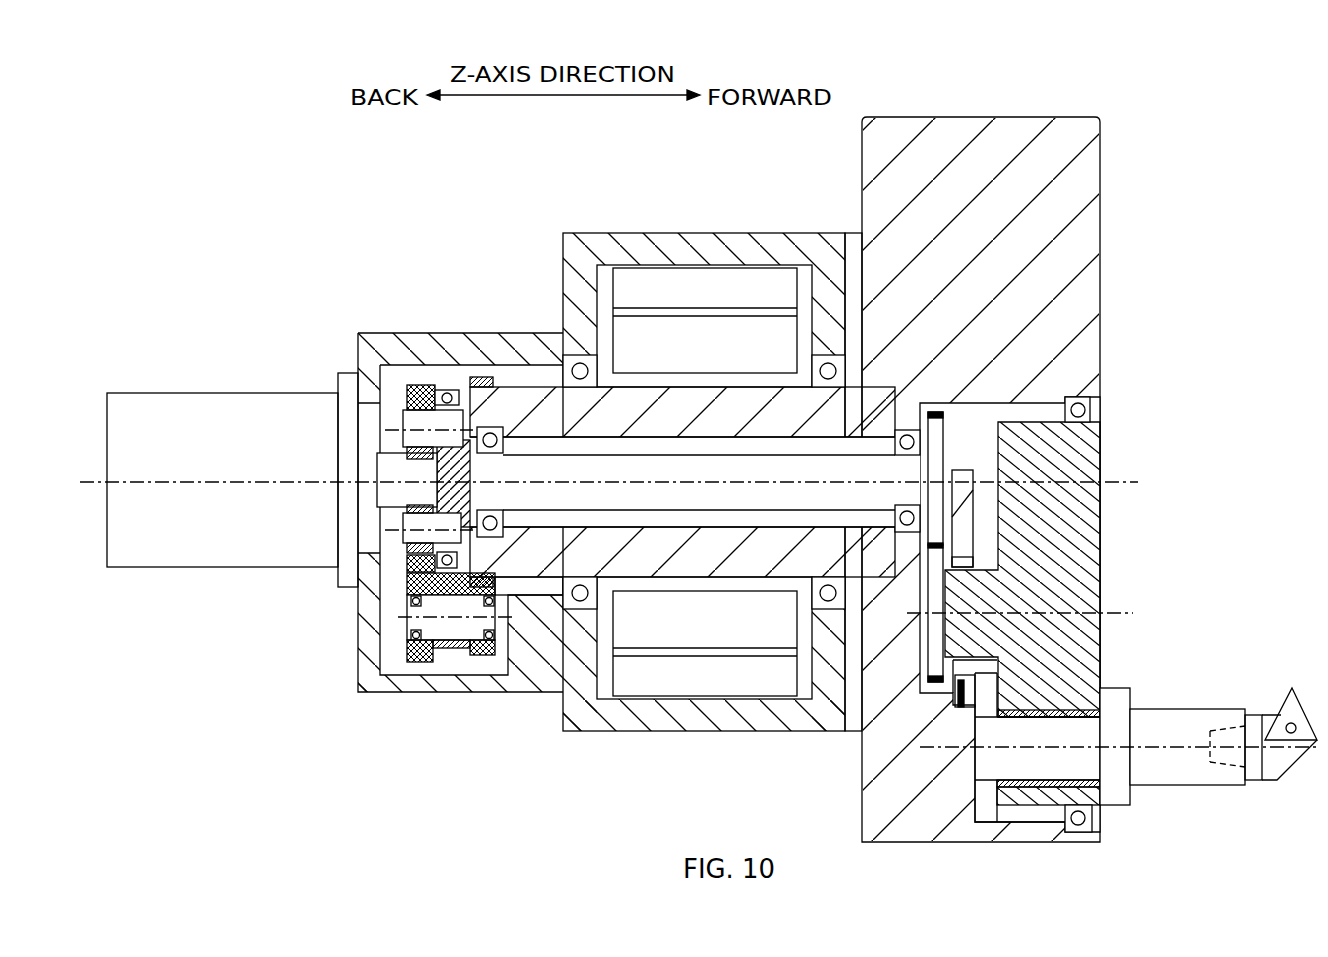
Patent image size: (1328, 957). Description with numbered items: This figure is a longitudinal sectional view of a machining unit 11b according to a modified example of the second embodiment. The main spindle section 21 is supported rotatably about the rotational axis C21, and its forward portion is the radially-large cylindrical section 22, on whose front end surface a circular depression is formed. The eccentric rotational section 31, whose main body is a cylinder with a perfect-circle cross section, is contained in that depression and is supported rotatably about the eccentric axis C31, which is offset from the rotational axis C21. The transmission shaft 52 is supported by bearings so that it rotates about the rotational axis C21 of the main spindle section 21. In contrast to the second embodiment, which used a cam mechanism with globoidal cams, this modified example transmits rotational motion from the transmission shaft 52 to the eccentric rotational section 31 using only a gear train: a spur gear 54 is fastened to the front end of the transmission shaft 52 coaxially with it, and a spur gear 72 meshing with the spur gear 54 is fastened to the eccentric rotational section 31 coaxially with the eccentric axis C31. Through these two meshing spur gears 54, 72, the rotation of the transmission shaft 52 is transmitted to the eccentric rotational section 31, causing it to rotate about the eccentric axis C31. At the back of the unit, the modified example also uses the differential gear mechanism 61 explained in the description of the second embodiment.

The machining unit 11b is at (1092, 88).
The main spindle section 21 is at (943, 104).
The cylindrical section 22 is at (1020, 125).
The eccentric rotational section 31 is at (1088, 518).
The transmission shaft 52 is at (700, 470).
The spur gear 54 is at (937, 452).
The differential gear mechanism 61 is at (379, 600).
The spur gear 72 is at (935, 647).
The rotational axis C21 is at (1120, 468).
The eccentric axis C31 is at (1090, 603).